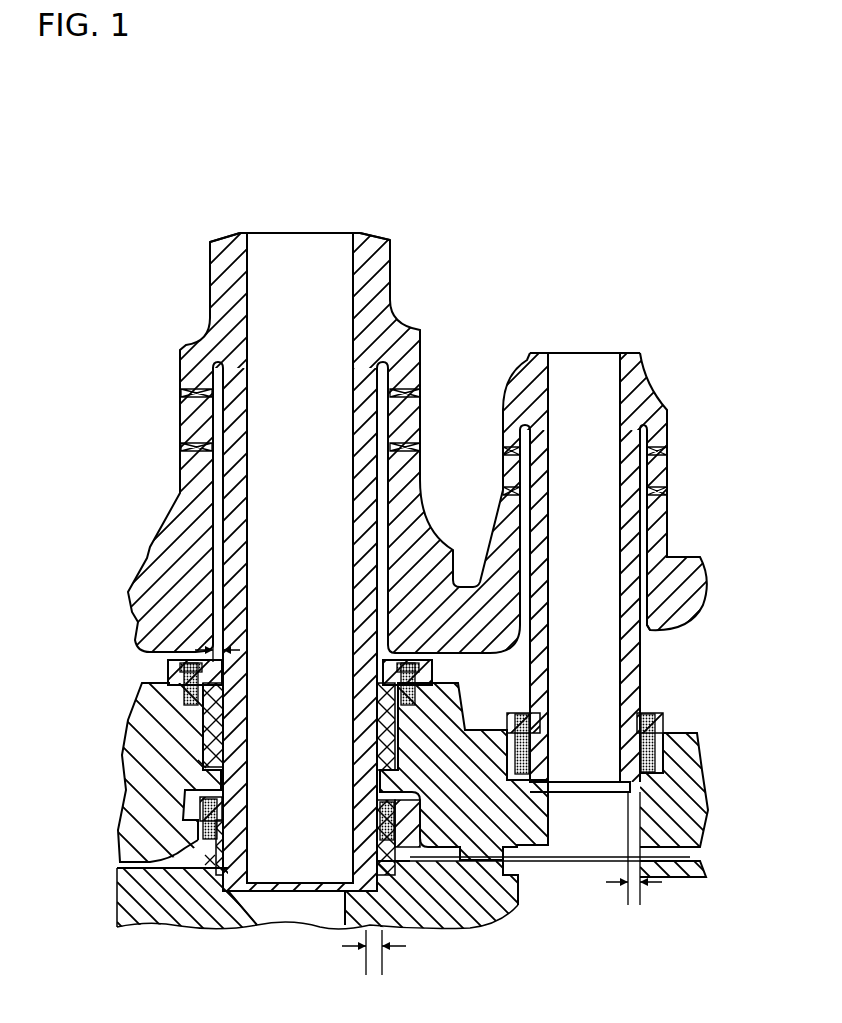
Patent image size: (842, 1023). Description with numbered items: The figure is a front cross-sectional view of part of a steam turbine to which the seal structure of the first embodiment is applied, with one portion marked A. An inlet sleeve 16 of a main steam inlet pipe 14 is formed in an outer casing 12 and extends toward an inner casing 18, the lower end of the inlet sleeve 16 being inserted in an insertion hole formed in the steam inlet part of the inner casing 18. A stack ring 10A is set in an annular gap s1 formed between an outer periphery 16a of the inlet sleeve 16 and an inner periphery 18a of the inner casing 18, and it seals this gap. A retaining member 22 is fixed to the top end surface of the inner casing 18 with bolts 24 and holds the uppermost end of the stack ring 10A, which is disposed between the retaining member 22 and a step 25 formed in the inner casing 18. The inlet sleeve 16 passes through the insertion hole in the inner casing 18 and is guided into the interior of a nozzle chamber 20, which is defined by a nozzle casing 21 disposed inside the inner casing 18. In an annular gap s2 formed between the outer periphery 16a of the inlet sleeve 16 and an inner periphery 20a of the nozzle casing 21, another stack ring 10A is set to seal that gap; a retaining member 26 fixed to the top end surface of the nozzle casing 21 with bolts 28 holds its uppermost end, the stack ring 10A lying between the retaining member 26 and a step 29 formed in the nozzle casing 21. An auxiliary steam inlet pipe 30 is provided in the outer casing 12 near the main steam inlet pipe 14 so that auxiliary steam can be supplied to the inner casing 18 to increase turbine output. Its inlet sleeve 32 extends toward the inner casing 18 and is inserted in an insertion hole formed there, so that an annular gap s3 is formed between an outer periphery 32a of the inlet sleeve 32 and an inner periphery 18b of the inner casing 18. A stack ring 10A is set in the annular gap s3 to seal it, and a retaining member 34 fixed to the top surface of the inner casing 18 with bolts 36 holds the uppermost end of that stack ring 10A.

The stack ring 10A is at (200, 760).
The outer casing 12 is at (153, 568).
The main steam inlet pipe 14 is at (377, 243).
The inlet sleeve 16 is at (251, 447).
The outer periphery 16a is at (217, 492).
The inner casing 18 is at (140, 703).
The inner periphery 18a is at (213, 745).
The inner periphery 18b is at (558, 797).
The nozzle chamber 20 is at (290, 912).
The inner periphery 20a is at (224, 860).
The nozzle casing 21 is at (240, 912).
The retaining member 22 is at (185, 660).
The bolts 24 is at (186, 684).
The step 25 is at (387, 745).
The retaining member 26 is at (200, 808).
The bolts 28 is at (196, 850).
The step 29 is at (387, 840).
The auxiliary steam inlet pipe 30 is at (636, 372).
The inlet sleeve 32 is at (646, 534).
The outer periphery 32a is at (642, 650).
The retaining member 34 is at (663, 720).
The bolts 36 is at (675, 733).
The seal region A is at (232, 740).
The annular gap s1 is at (240, 650).
The annular gap s2 is at (391, 952).
The annular gap s3 is at (648, 848).